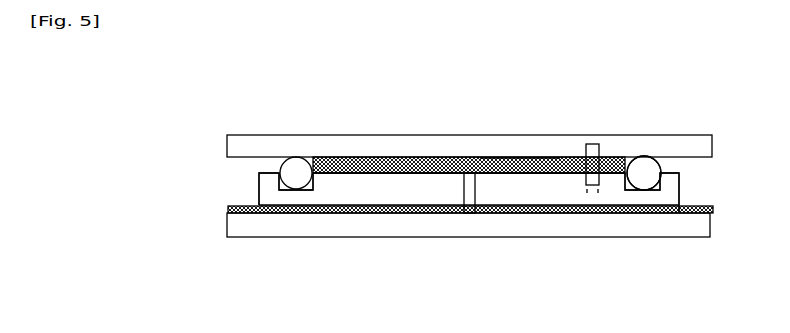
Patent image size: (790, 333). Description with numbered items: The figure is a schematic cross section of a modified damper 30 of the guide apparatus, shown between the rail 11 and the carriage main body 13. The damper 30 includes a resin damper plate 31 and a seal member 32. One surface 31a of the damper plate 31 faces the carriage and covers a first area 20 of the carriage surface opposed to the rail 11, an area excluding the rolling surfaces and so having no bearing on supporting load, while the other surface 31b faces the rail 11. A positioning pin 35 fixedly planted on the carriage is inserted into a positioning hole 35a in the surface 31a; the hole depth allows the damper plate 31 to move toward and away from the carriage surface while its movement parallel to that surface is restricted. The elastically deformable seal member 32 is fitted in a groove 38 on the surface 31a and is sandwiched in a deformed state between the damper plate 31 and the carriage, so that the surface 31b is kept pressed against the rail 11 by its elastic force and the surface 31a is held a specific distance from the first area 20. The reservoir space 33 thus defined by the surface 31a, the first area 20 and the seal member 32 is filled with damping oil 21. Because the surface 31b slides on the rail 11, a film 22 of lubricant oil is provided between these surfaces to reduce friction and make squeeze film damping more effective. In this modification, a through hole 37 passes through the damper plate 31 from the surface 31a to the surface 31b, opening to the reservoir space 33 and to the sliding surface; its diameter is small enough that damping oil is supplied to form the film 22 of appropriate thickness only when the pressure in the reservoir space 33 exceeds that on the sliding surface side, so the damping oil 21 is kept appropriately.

The rail 11 is at (243, 228).
The carriage main body 13 is at (239, 146).
The first area 20 is at (328, 156).
The damping oil 21 is at (371, 160).
The film of lubricant oil 22 is at (236, 211).
The damper 30 is at (202, 173).
The damper plate 31 is at (668, 193).
The one surface of the damper plate 31a is at (393, 160).
The other surface of the damper plate 31b is at (361, 203).
The seal member 32 is at (647, 167).
The reservoir space 33 is at (519, 164).
The positioning pin 35 is at (598, 143).
The positioning hole 35a is at (592, 193).
The through hole 37 is at (477, 192).
The groove 38 is at (283, 198).